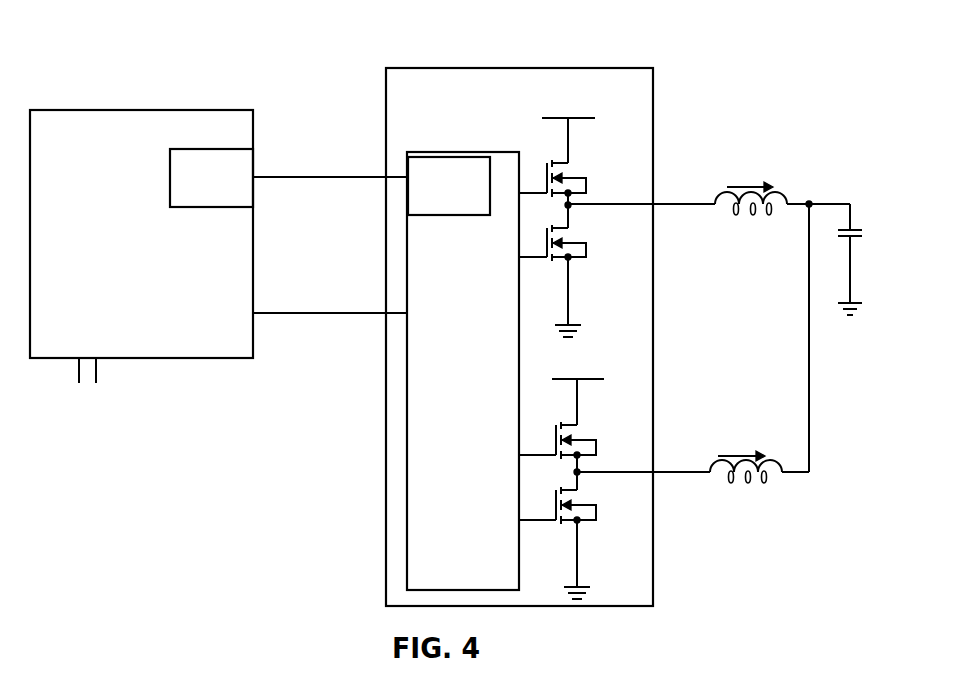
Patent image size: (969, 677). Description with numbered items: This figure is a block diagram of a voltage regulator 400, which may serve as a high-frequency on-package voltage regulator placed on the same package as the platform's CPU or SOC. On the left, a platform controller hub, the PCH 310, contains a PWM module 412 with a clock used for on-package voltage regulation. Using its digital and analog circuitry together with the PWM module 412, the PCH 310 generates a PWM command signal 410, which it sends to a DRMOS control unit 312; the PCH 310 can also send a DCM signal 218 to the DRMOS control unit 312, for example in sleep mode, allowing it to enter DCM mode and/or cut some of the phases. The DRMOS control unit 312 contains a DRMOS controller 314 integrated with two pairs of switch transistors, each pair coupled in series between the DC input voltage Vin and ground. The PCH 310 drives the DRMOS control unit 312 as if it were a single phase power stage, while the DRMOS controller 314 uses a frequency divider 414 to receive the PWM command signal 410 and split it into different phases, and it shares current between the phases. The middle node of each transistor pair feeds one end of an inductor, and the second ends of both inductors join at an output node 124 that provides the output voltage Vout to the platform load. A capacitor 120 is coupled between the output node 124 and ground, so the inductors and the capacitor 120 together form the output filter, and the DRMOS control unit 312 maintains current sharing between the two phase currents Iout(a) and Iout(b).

The voltage regulator 400 is at (214, 24).
The platform controller hub (PCH) 310 is at (88, 110).
The PWM module 412 is at (170, 161).
The PWM command signal 410 is at (310, 178).
The DCM signal 218 is at (310, 314).
The DRMOS control unit 312 is at (653, 78).
The DRMOS controller 314 is at (407, 526).
The frequency divider 414 is at (430, 216).
The output node 124 is at (807, 207).
The capacitor 120 is at (856, 226).